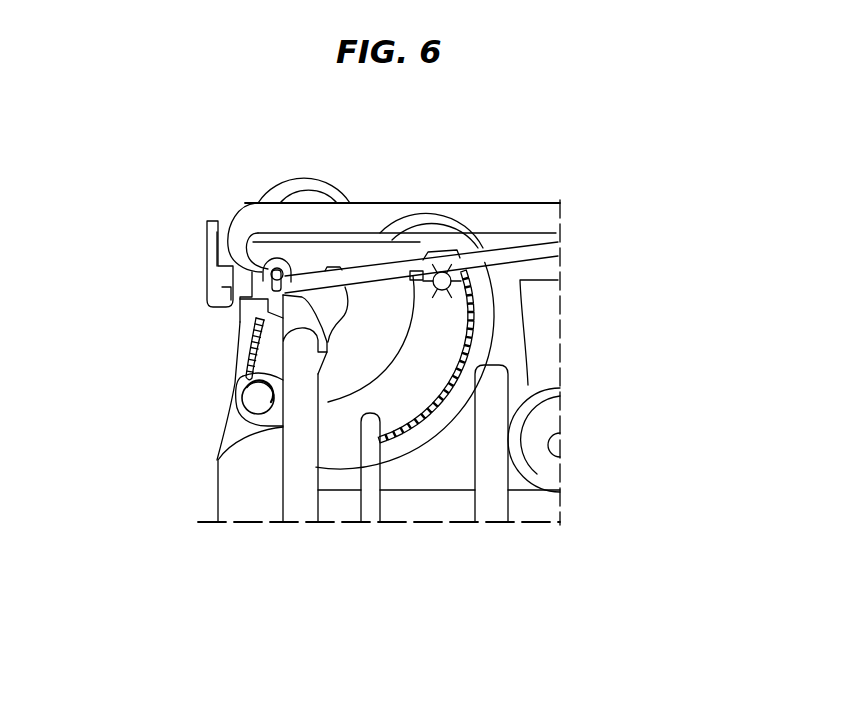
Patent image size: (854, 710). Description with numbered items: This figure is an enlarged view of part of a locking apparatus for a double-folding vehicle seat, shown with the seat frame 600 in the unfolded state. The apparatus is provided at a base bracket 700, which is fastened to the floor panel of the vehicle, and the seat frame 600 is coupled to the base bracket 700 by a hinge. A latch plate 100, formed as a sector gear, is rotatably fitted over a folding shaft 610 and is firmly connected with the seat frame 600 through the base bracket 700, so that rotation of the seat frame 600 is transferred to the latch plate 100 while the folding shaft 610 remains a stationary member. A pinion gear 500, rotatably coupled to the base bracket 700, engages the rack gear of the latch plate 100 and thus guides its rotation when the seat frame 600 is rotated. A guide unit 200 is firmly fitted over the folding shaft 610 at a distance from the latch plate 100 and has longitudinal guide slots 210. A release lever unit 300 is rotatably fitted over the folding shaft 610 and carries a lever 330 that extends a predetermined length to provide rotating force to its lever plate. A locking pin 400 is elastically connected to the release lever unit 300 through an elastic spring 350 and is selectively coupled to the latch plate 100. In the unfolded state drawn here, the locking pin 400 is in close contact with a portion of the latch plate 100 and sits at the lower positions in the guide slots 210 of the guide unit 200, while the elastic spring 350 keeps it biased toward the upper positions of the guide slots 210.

The latch plate 100 is at (370, 252).
The guide unit 200 is at (277, 318).
The guide slots 210 is at (240, 381).
The release lever unit 300 is at (207, 258).
The lever 330 is at (548, 249).
The elastic spring 350 is at (240, 347).
The locking pin 400 is at (252, 402).
The pinion gear 500 is at (467, 292).
The seat frame 600 is at (513, 220).
The folding shaft 610 is at (298, 500).
The base bracket 700 is at (435, 470).